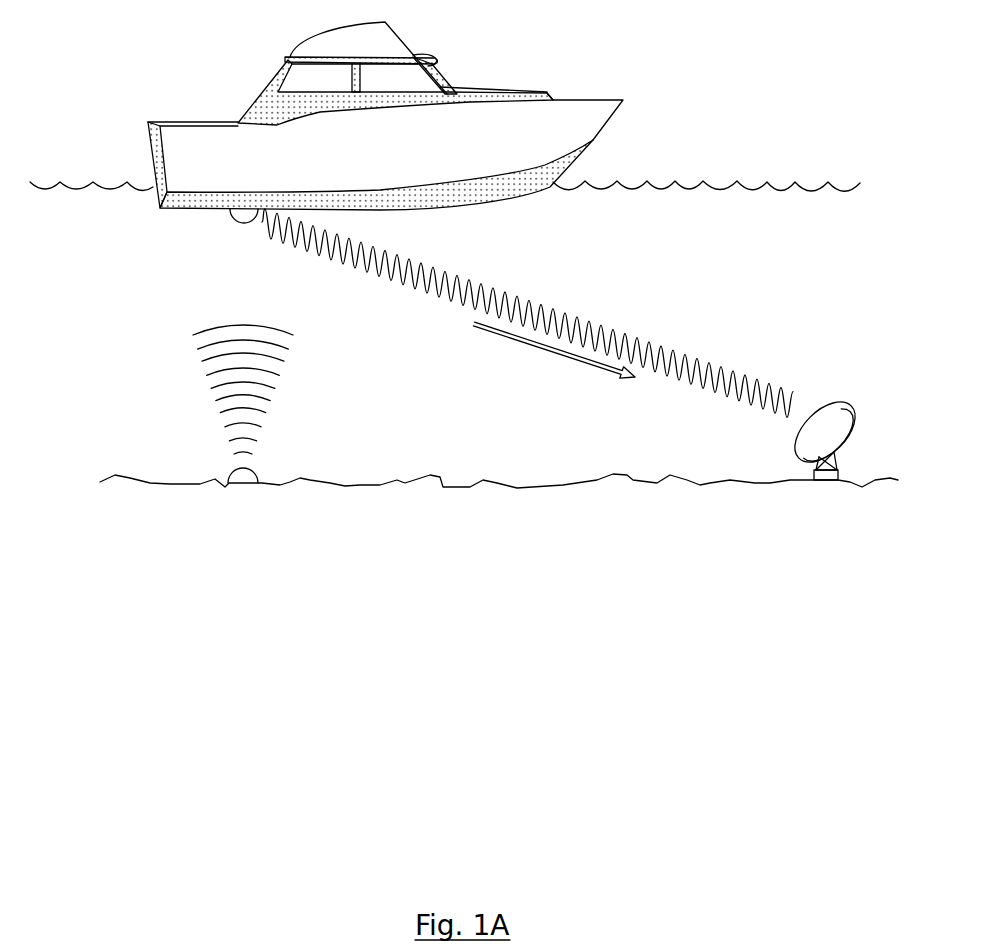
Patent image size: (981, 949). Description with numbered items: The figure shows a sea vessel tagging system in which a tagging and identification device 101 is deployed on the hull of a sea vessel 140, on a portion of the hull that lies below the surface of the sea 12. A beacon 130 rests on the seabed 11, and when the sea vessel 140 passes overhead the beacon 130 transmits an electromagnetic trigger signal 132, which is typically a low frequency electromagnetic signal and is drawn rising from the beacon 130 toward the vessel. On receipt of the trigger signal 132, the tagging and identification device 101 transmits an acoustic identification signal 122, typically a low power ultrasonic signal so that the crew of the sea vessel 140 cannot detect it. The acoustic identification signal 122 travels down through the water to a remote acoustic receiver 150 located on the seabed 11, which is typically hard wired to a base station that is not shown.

The sea vessel 140 is at (146, 144).
The tagging and identification device 101 is at (236, 218).
The acoustic identification signal 122 is at (592, 321).
The electromagnetic trigger signal 132 is at (292, 381).
The beacon 130 is at (262, 475).
The remote acoustic receiver 150 is at (813, 433).
The surface of the sea 12 is at (445, 165).
The seabed 11 is at (499, 501).